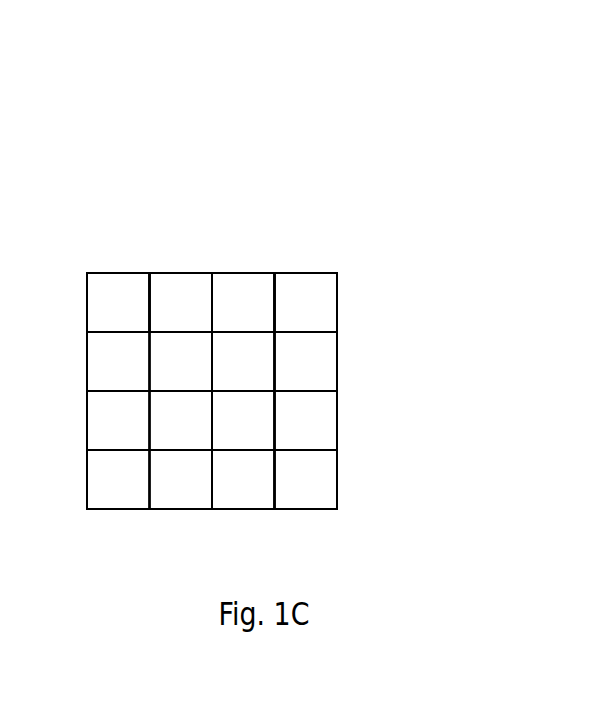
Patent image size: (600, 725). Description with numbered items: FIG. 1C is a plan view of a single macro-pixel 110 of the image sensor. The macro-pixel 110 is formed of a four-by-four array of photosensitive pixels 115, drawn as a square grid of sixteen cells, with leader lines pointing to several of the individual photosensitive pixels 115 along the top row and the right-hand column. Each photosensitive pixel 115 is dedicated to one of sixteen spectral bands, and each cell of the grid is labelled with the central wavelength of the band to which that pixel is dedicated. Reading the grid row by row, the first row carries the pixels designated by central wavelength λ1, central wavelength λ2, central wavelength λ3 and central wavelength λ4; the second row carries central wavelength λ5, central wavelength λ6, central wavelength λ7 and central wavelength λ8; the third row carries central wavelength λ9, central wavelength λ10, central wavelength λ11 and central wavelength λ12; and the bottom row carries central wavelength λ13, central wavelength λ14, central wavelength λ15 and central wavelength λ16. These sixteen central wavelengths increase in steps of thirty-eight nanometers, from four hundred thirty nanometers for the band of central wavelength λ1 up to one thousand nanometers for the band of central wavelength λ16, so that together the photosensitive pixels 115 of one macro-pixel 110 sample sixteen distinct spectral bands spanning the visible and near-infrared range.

The macro-pixel 110 is at (68, 101).
The photosensitive pixels 115 is at (122, 277).
The central wavelength λ 1 is at (118, 302).
The central wavelength λ 2 is at (181, 302).
The central wavelength λ 3 is at (243, 302).
The central wavelength λ 4 is at (306, 302).
The central wavelength λ 5 is at (118, 361).
The central wavelength λ 6 is at (181, 361).
The central wavelength λ 7 is at (243, 361).
The central wavelength λ 8 is at (306, 361).
The central wavelength λ 9 is at (118, 420).
The central wavelength λ 10 is at (181, 420).
The central wavelength λ 11 is at (243, 420).
The central wavelength λ 12 is at (306, 420).
The central wavelength λ 13 is at (118, 479).
The central wavelength λ 14 is at (181, 479).
The central wavelength λ 15 is at (243, 479).
The central wavelength λ 16 is at (306, 479).